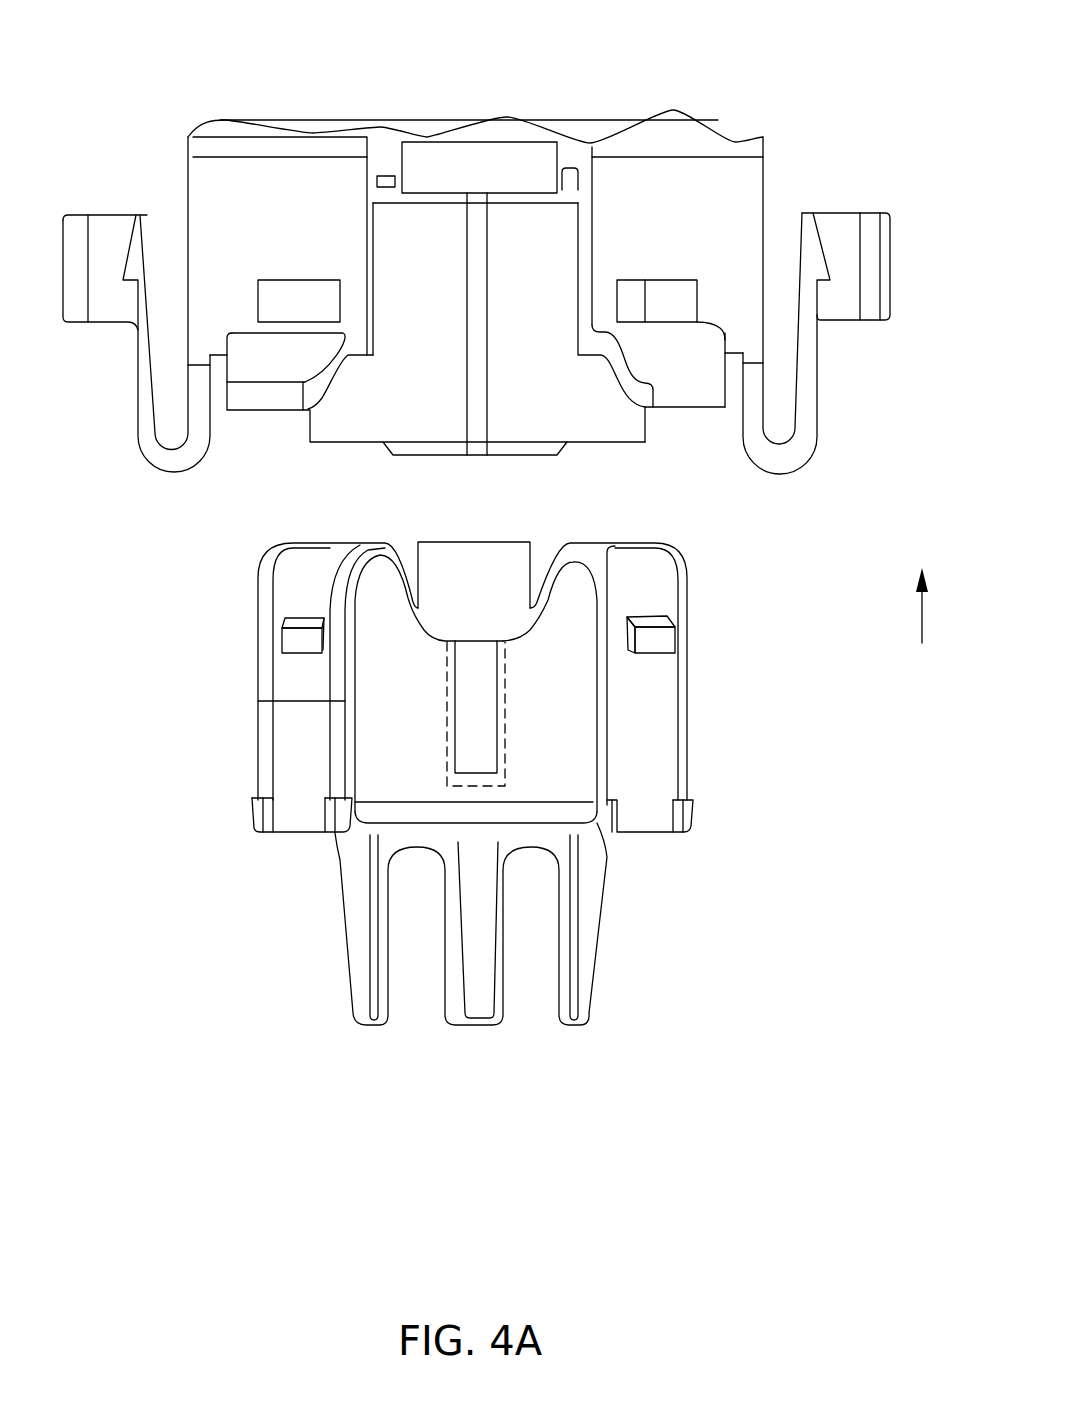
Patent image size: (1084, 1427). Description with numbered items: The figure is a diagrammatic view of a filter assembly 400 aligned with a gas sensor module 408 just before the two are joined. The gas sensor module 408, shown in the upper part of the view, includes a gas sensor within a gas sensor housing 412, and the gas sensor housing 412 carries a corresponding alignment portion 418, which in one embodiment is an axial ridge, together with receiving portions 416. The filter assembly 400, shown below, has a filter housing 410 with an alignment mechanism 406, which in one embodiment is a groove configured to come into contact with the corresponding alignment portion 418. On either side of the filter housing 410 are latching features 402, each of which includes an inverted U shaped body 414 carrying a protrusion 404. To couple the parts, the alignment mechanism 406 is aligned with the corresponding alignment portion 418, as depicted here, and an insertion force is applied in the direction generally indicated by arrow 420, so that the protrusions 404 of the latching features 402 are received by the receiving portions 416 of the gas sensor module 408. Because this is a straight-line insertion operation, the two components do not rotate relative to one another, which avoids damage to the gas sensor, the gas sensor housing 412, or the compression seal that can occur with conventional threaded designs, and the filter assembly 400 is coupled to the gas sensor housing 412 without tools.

The filter assembly 400 is at (722, 1040).
The latching features 402 is at (228, 740).
The protrusion 404 is at (298, 638).
The alignment mechanism 406 is at (472, 728).
The gas sensor module 408 is at (782, 95).
The filter housing 410 is at (557, 755).
The gas sensor housing 412 is at (288, 232).
The inverted U shaped body 414 is at (303, 573).
The receiving portions 416 is at (632, 288).
The corresponding alignment portion 418 is at (475, 317).
The arrow 420 is at (922, 620).